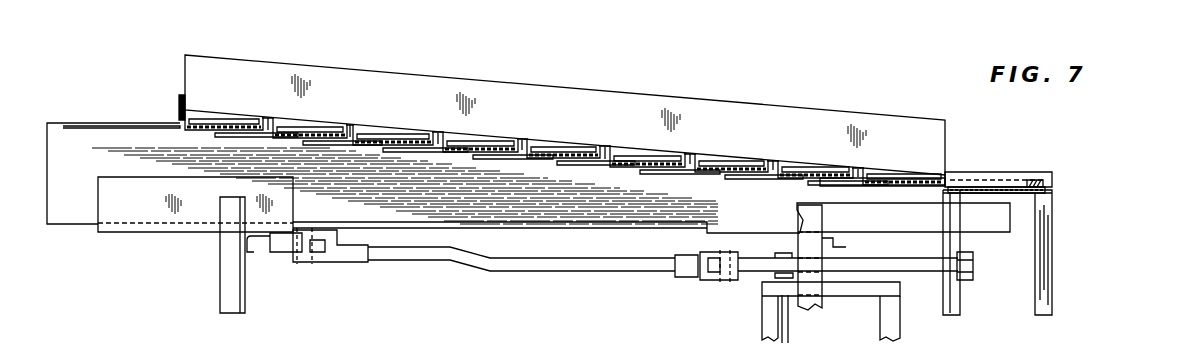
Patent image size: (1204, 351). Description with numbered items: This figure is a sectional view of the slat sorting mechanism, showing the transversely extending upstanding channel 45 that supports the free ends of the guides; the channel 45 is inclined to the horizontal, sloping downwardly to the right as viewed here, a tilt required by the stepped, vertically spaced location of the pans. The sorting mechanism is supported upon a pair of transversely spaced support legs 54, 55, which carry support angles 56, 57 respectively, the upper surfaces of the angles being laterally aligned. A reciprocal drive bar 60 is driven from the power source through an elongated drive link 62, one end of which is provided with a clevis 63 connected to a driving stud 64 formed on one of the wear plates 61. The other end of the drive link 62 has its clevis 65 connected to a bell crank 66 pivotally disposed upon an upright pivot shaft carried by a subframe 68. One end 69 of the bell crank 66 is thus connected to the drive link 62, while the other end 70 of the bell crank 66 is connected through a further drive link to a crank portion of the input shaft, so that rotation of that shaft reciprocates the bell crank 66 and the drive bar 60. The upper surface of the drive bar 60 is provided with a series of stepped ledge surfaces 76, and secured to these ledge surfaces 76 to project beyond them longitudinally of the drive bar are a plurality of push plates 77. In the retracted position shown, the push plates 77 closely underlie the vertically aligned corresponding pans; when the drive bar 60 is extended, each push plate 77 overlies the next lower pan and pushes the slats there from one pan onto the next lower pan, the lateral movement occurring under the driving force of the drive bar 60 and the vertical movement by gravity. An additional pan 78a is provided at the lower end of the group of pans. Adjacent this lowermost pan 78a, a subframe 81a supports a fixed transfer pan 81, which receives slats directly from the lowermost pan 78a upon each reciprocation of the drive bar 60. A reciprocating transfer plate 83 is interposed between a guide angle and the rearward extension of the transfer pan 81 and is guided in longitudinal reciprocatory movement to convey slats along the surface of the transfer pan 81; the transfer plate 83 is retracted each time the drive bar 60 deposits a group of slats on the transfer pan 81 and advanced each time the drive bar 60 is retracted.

The channel 45 is at (460, 83).
The support leg 54 is at (238, 293).
The support leg 55 is at (812, 307).
The support angle 56 is at (830, 241).
The support angle 57 is at (250, 242).
The reciprocal drive bar 60 is at (556, 200).
The wear plate 61 is at (296, 225).
The drive link 62 is at (572, 268).
The clevis 63 is at (332, 257).
The driving stud 64 is at (283, 247).
The clevis 65 is at (702, 278).
The bell crank 66 is at (755, 285).
The subframe 68 is at (908, 333).
The bell crank end 69 is at (740, 267).
The bell crank other end 70 is at (910, 268).
The stepped ledge surface 76 is at (673, 172).
The push plate 77 is at (633, 168).
The lowermost pan 78a is at (913, 183).
The transfer pan 81 is at (1003, 190).
The subframe 81a is at (1063, 226).
The reciprocating transfer plate 83 is at (977, 186).